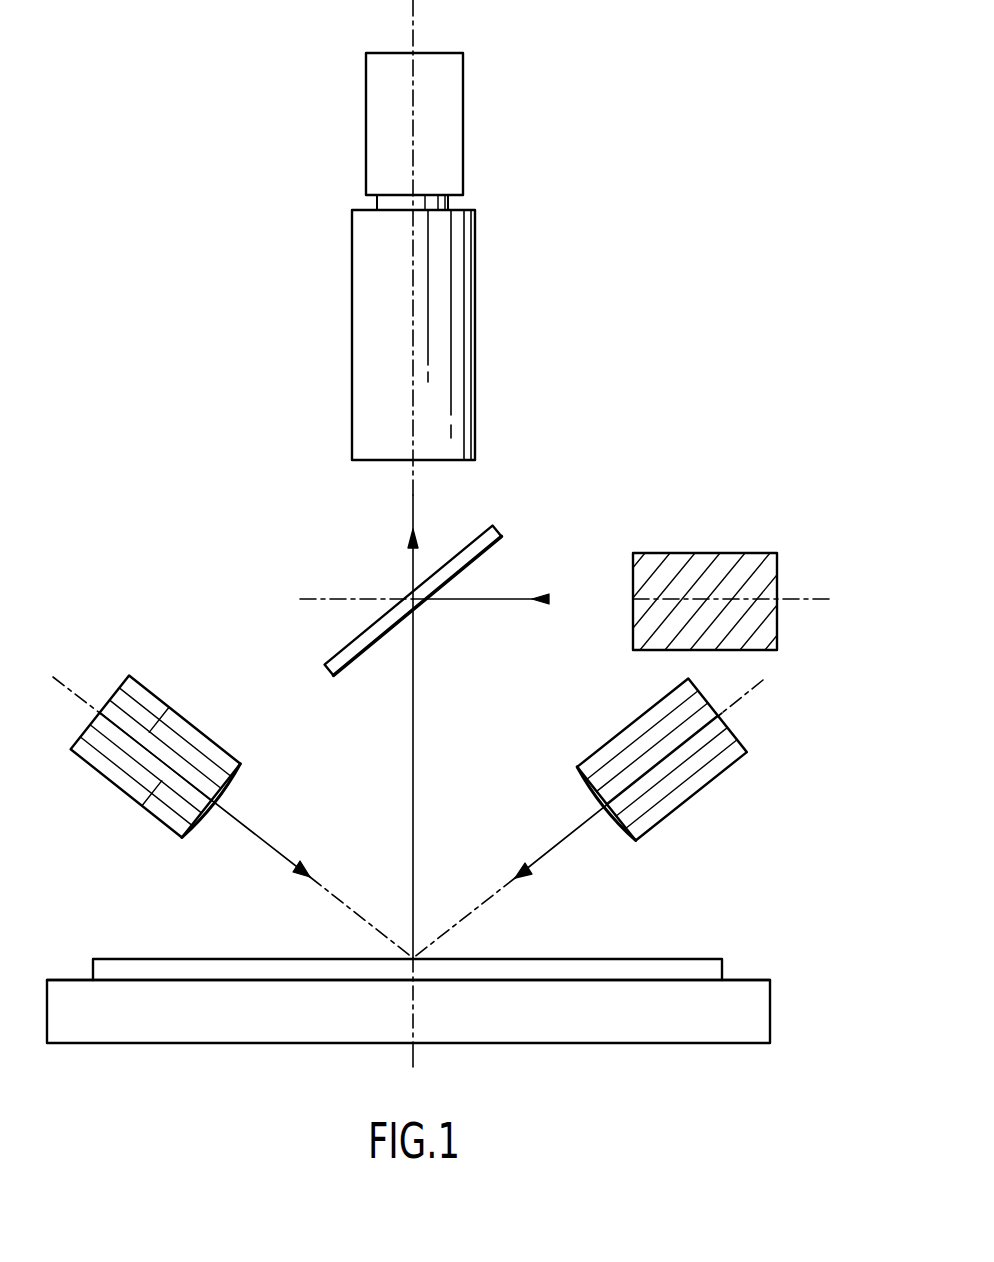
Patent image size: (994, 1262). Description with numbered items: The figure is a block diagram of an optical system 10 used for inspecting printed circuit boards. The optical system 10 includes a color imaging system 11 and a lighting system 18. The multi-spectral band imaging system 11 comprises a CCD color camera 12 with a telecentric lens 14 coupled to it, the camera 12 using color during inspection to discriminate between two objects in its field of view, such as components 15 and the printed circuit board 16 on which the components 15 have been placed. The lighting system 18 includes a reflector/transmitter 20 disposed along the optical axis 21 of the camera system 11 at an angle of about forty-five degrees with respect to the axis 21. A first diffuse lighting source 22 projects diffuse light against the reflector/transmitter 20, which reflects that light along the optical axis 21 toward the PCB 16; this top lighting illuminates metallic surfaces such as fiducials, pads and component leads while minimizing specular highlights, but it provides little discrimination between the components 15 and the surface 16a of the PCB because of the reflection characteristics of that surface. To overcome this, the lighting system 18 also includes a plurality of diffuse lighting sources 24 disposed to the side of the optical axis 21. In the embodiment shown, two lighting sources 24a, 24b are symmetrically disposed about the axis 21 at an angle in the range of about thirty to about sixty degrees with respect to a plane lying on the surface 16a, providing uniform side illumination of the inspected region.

The optical system 10 is at (688, 102).
The color imaging system 11 is at (495, 460).
The CCD color camera 12 is at (366, 125).
The telecentric lens 14 is at (352, 333).
The components 15 is at (172, 959).
The printed circuit board 16 is at (614, 1027).
The surface of the PCB 16a is at (743, 980).
The lighting system 18 is at (820, 877).
The reflector/transmitter 20 is at (502, 533).
The optical axis 21 is at (413, 498).
The first diffuse lighting source 22 is at (703, 553).
The diffuse lighting sources 24 is at (140, 649).
The lighting source 24a is at (560, 700).
The lighting source 24b is at (124, 792).